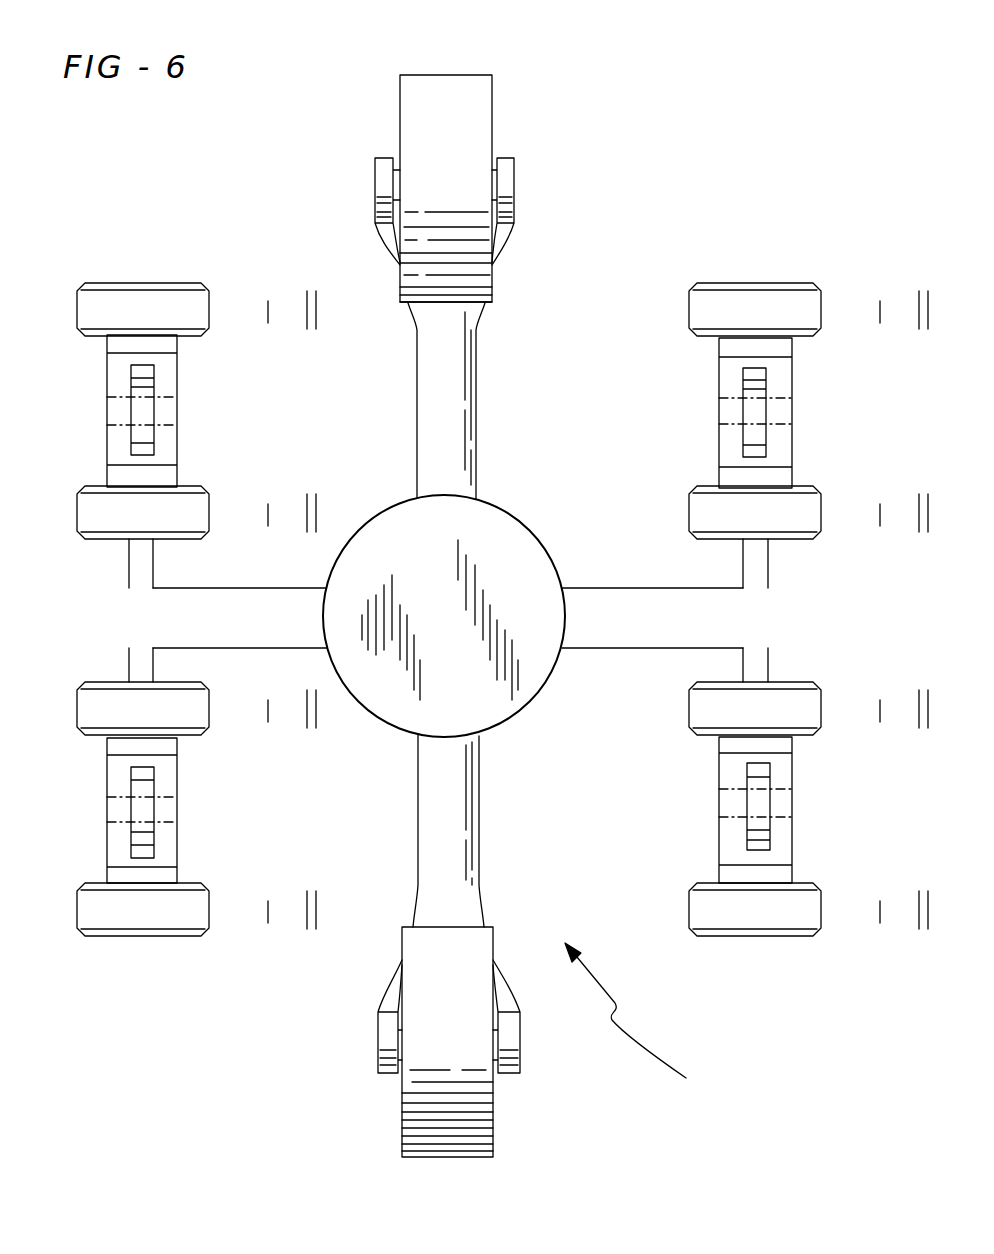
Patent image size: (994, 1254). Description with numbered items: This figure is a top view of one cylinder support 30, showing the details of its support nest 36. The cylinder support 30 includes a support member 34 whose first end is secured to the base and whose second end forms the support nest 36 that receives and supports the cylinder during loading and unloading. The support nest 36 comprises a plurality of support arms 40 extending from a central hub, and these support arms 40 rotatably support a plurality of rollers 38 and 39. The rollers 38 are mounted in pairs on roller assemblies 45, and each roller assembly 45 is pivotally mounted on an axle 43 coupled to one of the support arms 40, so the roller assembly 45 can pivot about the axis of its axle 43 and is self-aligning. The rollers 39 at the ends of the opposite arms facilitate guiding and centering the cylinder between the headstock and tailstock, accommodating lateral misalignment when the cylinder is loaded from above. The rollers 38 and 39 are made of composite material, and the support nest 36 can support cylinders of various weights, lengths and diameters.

The cylinder support 30 is at (376, 514).
The support member 34 is at (518, 717).
The support nest 36 is at (648, 1024).
The rollers 38 is at (88, 311).
The rollers 39 is at (475, 112).
The support arms 40 is at (586, 587).
The axle 43 is at (173, 423).
The roller assembly 45 is at (178, 378).